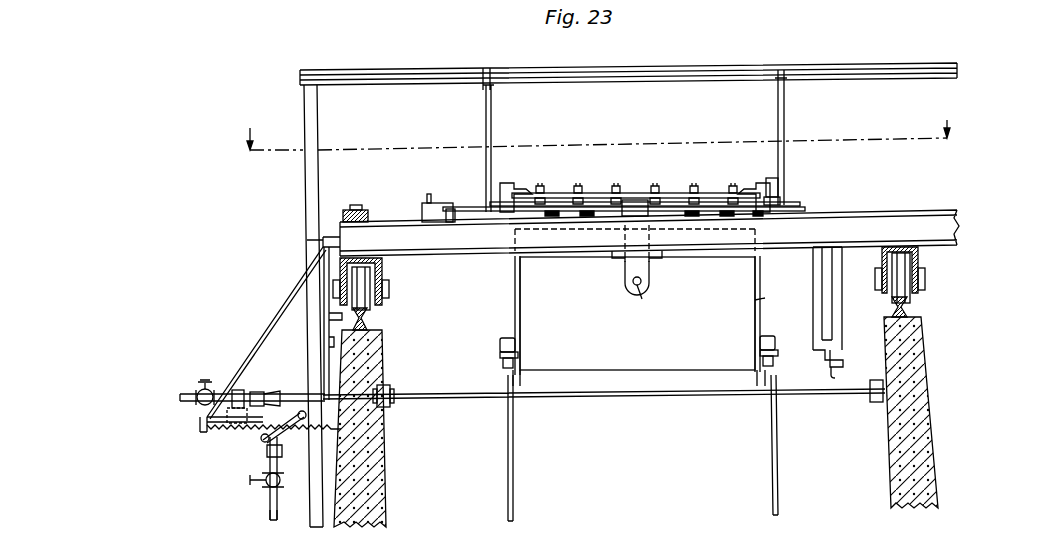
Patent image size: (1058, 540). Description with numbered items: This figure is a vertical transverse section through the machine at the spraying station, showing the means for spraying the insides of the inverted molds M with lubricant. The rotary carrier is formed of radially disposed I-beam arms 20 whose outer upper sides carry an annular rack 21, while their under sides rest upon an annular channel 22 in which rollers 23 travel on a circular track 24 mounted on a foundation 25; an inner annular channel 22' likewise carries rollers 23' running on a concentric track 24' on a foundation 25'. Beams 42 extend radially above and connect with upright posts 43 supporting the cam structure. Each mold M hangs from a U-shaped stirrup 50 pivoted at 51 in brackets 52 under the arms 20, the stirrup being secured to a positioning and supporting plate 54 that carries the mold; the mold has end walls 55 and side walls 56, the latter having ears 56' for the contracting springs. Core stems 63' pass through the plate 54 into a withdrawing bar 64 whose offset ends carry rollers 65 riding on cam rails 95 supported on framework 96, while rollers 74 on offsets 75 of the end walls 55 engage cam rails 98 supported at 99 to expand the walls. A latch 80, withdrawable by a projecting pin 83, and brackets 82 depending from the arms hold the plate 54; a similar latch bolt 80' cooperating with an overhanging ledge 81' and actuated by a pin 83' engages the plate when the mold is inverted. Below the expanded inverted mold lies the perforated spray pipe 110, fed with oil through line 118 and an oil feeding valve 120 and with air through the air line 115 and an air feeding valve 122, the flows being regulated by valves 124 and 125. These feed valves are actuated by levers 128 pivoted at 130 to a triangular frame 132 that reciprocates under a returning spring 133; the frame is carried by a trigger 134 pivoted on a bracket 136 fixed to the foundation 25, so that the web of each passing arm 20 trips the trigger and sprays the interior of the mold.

The radially disposed arms 20 is at (905, 214).
The annular rack 21 is at (358, 206).
The annular channel 22 is at (375, 282).
The rollers 23 is at (380, 287).
The circular track 24 is at (593, 215).
The annular channel 22' is at (886, 270).
The rollers 23' is at (921, 278).
The circular track 24' is at (919, 307).
The foundation 25 is at (369, 428).
The foundation 25' is at (885, 412).
The beams 42 is at (857, 66).
The upright posts 43 is at (304, 95).
The U-shaped stirrup 50 is at (636, 200).
The pivots 51 is at (648, 292).
The brackets 52 is at (648, 268).
The positioning and supporting plate 54 is at (472, 207).
The end walls 55 is at (513, 287).
The side walls 56 is at (764, 302).
The ears 56' is at (640, 328).
The stems 63' is at (649, 190).
The withdrawing bar 64 is at (580, 193).
The rollers 65 is at (501, 183).
The rollers 74 is at (500, 355).
The offsets 75 is at (505, 368).
The latch 80 is at (815, 365).
The latch bolt 80' is at (614, 223).
The overhanging ledge or shoulder 81' is at (445, 201).
The brackets or supporting devices 82 is at (818, 280).
The projecting pin 83 is at (842, 375).
The pin 83' is at (428, 197).
The cam rails 95 is at (787, 198).
The framework 96 is at (486, 108).
The cam rails 98 is at (521, 382).
The supports 99 is at (508, 449).
The perforated spray pipe 110 is at (572, 403).
The air line 115 is at (187, 394).
The oil line 118 is at (270, 514).
The oil feeding valve 120 is at (268, 455).
The air feeding valve 122 is at (258, 392).
The valve 124 is at (262, 484).
The valve 125 is at (207, 381).
The levers or links 128 is at (261, 437).
The pivot 130 is at (302, 410).
The triangular frame 132 is at (323, 325).
The returning spring 133 is at (230, 423).
The trigger 134 is at (307, 240).
The bracket 136 is at (315, 291).
The molds M is at (637, 313).